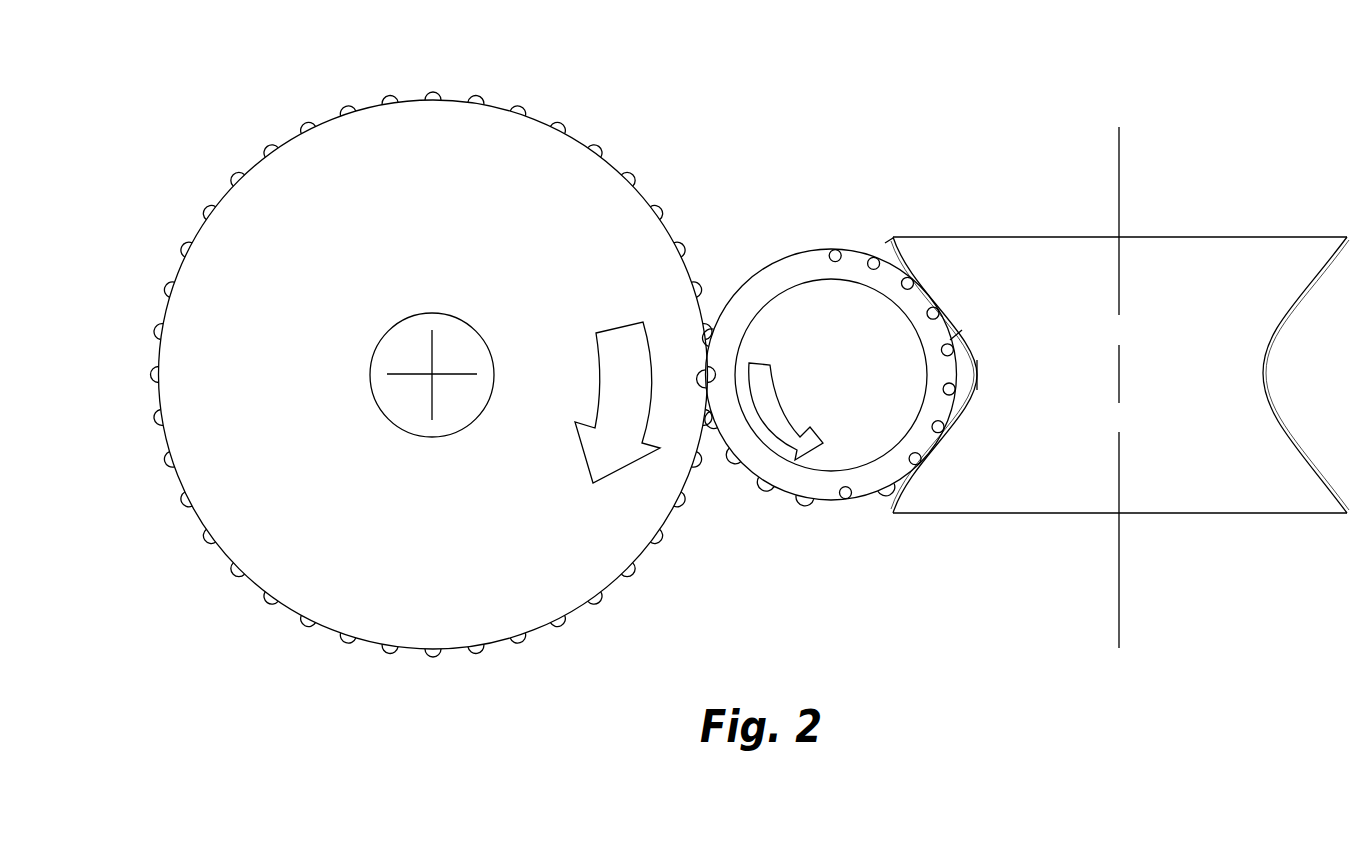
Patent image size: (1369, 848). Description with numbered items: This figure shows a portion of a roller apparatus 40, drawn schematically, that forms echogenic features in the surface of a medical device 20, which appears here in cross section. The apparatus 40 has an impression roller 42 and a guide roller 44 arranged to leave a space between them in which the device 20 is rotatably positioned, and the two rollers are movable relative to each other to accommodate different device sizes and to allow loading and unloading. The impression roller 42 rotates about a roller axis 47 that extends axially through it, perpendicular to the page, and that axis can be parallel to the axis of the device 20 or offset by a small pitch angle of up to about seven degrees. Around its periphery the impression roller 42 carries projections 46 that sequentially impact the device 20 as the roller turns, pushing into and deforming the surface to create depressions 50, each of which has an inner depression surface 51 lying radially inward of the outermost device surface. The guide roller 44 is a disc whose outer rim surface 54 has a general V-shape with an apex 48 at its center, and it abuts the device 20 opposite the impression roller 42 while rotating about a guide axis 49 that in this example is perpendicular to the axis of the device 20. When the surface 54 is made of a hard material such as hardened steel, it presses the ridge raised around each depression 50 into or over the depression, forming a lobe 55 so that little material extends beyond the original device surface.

The apparatus 40 is at (759, 120).
The impression roller 42 is at (382, 163).
The guide roller 44 is at (1002, 268).
The projections 46 is at (530, 112).
The roller axis 47 is at (432, 375).
The apex 48 is at (977, 367).
The guide axis 49 is at (1120, 200).
The device 20 is at (787, 272).
The depressions 50 is at (802, 500).
The depression surface 51 is at (843, 498).
The outer rim surface 54 is at (895, 247).
The lobe 55 is at (952, 345).